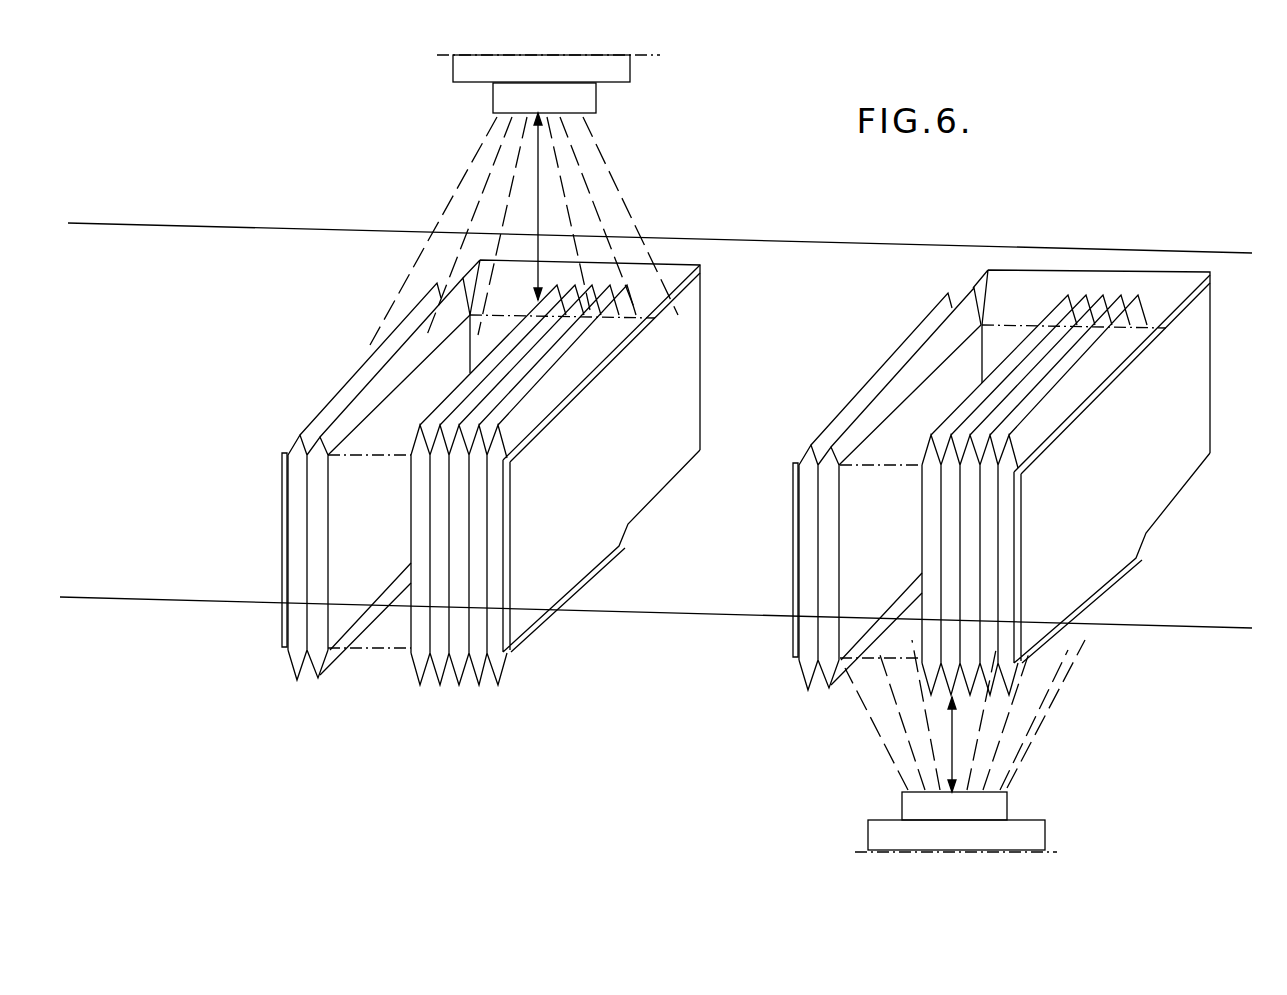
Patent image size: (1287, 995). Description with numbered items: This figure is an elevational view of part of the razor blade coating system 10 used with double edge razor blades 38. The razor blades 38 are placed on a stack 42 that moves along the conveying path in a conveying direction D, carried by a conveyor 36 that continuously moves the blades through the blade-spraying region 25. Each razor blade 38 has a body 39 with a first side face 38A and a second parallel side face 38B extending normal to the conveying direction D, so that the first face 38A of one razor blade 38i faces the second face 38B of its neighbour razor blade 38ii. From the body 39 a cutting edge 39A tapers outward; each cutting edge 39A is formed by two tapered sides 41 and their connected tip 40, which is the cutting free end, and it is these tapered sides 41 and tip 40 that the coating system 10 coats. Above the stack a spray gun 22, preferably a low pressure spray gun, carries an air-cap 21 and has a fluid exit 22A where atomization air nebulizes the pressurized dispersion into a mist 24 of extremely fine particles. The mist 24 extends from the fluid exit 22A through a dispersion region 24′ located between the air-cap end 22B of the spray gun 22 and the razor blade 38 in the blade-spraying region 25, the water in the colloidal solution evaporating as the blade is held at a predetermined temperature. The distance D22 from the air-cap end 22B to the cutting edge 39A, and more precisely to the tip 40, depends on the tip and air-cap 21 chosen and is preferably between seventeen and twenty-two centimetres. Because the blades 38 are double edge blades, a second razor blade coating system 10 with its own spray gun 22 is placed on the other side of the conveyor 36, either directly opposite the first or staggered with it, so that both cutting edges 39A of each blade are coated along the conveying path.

The razor blade coating system 10 is at (1105, 760).
The air-cap 21 is at (580, 100).
The spray gun 22 is at (608, 66).
The fluid exit 22A is at (480, 99).
The air-cap end 22B is at (493, 116).
The mist 24 is at (583, 182).
The dispersion region 24′ is at (442, 200).
The blade-spraying region 25 is at (400, 277).
The conveyor 36 is at (74, 367).
The razor blades 38 is at (287, 633).
The first side face 38A is at (300, 570).
The second side face 38B is at (437, 603).
The razor blade 38i is at (420, 490).
The neighbour razor blade 38ii is at (440, 473).
The body 39 is at (300, 515).
The cutting edge 39A is at (297, 430).
The tip 40 is at (377, 360).
The tapered sides 41 is at (290, 660).
The stack 42 is at (528, 597).
The conveying direction D is at (165, 368).
The distance D22 is at (764, 452).